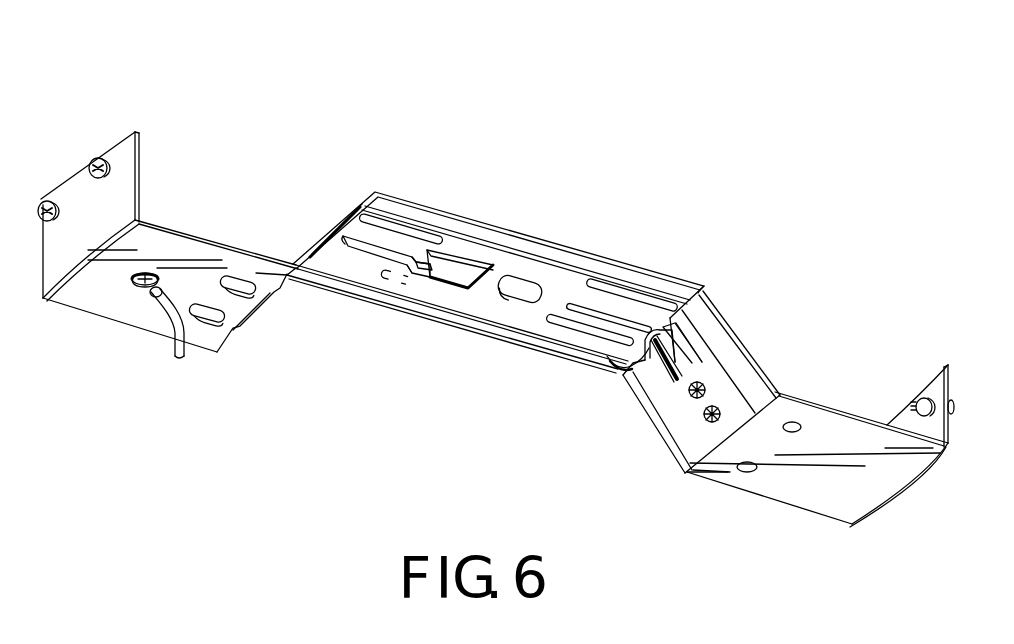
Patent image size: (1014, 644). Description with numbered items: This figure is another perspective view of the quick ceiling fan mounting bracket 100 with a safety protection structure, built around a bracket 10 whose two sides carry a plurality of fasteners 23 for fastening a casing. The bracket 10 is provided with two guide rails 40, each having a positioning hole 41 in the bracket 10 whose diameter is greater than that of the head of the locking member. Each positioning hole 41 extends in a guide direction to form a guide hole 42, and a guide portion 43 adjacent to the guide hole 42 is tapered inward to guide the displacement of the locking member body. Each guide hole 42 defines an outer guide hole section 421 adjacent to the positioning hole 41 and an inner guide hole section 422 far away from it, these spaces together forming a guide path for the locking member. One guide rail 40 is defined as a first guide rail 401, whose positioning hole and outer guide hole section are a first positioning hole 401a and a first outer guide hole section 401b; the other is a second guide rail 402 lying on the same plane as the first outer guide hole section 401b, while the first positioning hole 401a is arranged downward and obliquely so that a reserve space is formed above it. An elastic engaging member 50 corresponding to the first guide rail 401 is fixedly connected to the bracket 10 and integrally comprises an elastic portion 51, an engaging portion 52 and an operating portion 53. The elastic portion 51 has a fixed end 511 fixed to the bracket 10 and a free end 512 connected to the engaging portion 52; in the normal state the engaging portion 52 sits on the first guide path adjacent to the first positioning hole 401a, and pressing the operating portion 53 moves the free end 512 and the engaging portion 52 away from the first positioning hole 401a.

The bracket 10 is at (871, 419).
The fasteners 23 is at (99, 157).
The guide rails 40 is at (390, 246).
The positioning hole 41 is at (471, 268).
The guide hole 42 is at (381, 266).
The guide portion 43 is at (413, 266).
The elastic engaging member 50 is at (716, 388).
The elastic portion 51 is at (668, 378).
The engaging portion 52 is at (653, 318).
The operating portion 53 is at (610, 364).
The quick ceiling fan mounting bracket 100 is at (180, 227).
The first guide rail 401 is at (570, 310).
The first positioning hole 401a is at (708, 328).
The first outer guide hole section 401b is at (604, 309).
The second guide rail 402 is at (432, 270).
The outer guide hole section 421 is at (421, 246).
The inner guide hole section 422 is at (347, 289).
The fixed end 511 is at (690, 402).
The free end 512 is at (698, 338).